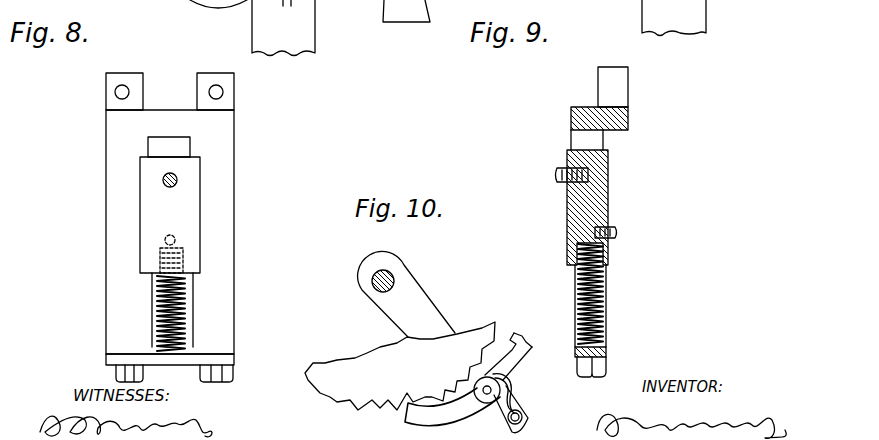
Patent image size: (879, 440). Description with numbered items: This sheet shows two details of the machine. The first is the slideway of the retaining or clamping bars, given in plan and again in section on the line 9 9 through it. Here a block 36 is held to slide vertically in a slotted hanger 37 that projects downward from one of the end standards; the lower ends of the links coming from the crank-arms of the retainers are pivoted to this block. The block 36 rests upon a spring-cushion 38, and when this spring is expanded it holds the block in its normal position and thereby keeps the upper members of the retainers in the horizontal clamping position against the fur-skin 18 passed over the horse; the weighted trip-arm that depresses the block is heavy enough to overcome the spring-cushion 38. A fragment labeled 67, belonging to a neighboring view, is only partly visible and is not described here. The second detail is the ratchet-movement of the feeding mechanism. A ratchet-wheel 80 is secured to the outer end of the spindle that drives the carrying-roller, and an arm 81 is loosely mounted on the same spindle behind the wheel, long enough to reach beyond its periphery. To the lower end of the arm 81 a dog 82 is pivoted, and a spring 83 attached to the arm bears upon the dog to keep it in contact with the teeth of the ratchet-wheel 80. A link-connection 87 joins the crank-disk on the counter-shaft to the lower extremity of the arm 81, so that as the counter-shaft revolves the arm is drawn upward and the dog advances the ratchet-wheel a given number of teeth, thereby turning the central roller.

In FIG. 8, the section line 9 is at (170, 190).
In FIG. 8, the lever (from preceding figure) 67 is at (220, 2).
In FIG. 8, the slotted hanger 37 is at (170, 227).
In FIG. 9, the slotted hanger 37 is at (571, 137).
In FIG. 8, the block 36 is at (170, 205).
In FIG. 9, the block 36 is at (602, 196).
In FIG. 8, the spring-cushion 38 is at (177, 302).
In FIG. 9, the spring-cushion 38 is at (598, 292).
In FIG. 10, the fur-skin 18 is at (395, 278).
In FIG. 10, the arm 81 is at (406, 294).
In FIG. 10, the ratchet-wheel 80 is at (400, 366).
In FIG. 10, the dog 82 is at (452, 407).
In FIG. 10, the spring 83 is at (509, 398).
In FIG. 10, the link-connection 87 is at (504, 383).